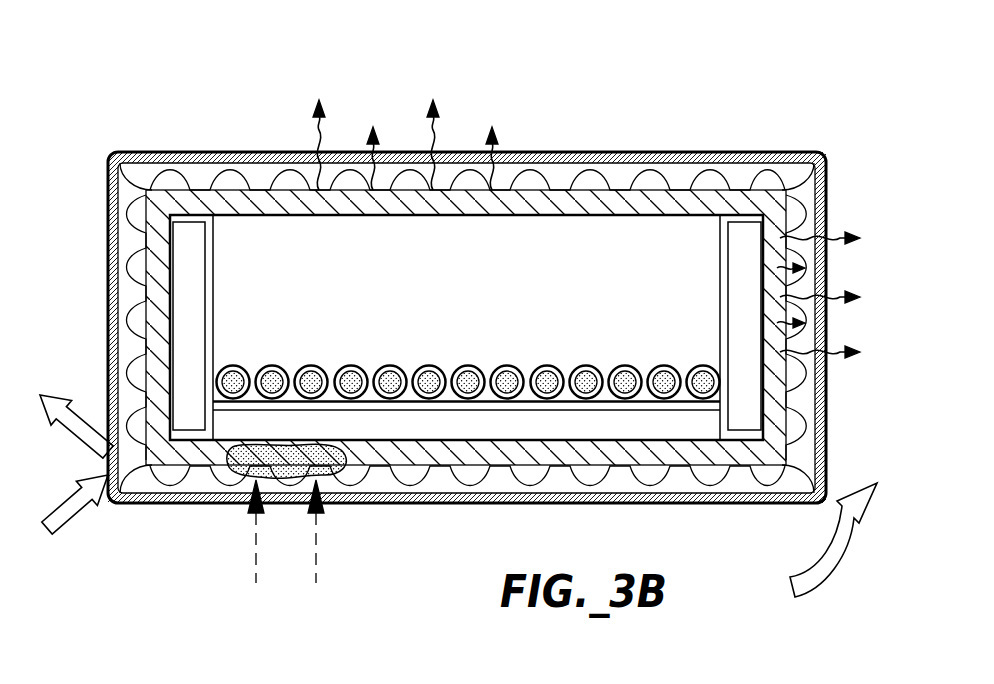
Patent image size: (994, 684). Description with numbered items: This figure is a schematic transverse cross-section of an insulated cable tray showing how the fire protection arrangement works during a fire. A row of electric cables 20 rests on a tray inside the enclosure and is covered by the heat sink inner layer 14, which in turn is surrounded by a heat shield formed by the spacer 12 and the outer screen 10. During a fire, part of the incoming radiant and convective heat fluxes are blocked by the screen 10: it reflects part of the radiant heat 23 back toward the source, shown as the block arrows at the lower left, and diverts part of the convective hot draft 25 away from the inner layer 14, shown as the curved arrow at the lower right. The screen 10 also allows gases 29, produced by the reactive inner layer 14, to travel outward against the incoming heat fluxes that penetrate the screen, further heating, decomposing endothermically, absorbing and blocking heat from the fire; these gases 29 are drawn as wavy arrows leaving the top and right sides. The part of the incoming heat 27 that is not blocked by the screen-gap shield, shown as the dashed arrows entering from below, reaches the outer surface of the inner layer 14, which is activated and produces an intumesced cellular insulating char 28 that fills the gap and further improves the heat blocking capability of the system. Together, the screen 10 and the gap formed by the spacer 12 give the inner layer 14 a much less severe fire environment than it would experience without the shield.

The screen 10 is at (670, 152).
The spacer 12 is at (748, 180).
The heat sink inner layer 14 is at (417, 217).
The electric cables 20 is at (352, 364).
The radiant heat 23 is at (78, 522).
The convective hot draft 25 is at (791, 587).
The incoming heat 27 is at (335, 583).
The intumesced cellular insulating char 28 is at (308, 446).
The gases 29 is at (508, 95).